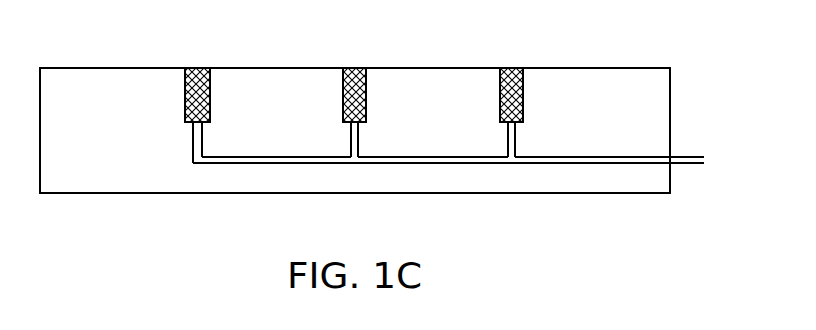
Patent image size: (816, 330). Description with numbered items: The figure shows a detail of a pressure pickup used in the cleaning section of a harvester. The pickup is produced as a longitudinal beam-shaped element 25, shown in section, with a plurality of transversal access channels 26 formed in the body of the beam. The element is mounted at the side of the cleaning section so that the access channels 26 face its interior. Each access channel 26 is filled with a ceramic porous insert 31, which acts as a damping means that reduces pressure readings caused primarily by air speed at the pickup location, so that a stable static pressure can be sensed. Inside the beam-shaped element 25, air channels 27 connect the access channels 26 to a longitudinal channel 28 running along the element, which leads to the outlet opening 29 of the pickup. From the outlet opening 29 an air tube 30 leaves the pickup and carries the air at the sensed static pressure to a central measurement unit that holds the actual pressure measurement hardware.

The beam-shaped element 25 is at (629, 78).
The access channels 26 is at (210, 90).
The air channels 27 is at (195, 142).
The longitudinal channel 28 is at (274, 160).
The outlet opening 29 is at (683, 137).
The air tube 30 is at (691, 163).
The ceramic porous insert 31 is at (200, 67).